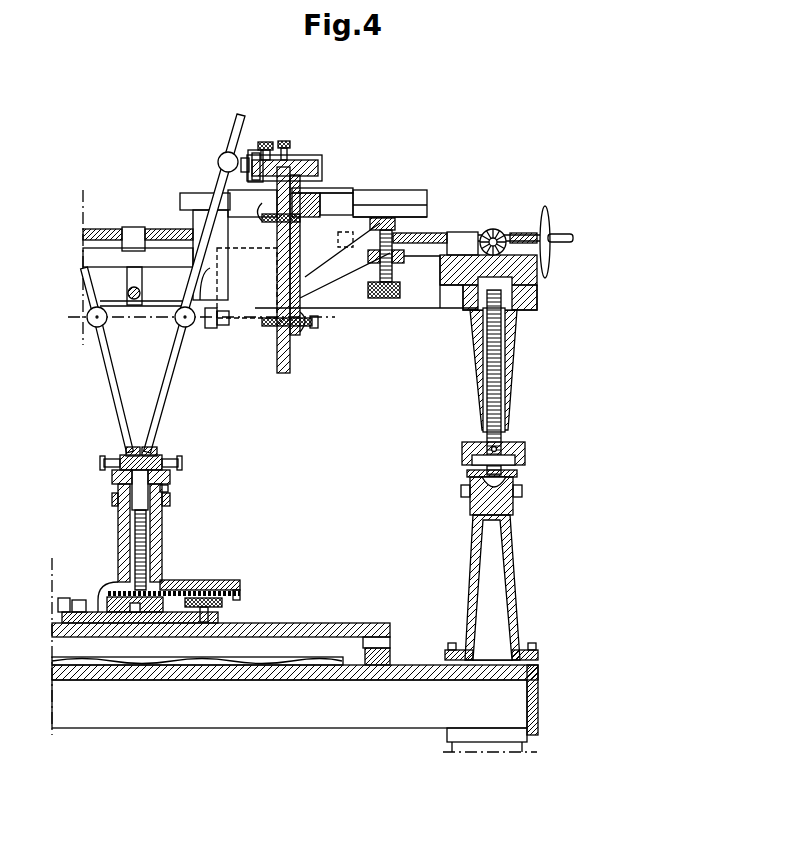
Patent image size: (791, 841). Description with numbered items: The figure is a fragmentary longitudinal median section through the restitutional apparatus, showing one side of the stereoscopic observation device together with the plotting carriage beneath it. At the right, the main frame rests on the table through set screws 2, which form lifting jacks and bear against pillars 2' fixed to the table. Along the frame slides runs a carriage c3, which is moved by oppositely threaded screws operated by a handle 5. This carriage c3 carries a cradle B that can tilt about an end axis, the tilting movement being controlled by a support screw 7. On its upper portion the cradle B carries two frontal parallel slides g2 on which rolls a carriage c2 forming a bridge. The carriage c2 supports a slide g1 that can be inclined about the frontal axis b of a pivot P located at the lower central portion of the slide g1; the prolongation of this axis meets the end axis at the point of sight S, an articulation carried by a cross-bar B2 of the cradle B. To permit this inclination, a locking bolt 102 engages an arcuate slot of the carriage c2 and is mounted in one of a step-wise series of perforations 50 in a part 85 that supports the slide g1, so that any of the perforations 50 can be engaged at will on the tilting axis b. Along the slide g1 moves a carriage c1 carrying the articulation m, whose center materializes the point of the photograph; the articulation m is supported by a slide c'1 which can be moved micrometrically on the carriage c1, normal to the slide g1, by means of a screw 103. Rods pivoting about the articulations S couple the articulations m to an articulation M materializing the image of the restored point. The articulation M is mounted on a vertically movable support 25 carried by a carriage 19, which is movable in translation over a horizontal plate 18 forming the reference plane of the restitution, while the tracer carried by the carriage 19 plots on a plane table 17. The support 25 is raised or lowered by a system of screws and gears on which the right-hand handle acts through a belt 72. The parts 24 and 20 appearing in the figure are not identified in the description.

The carriage c1 is at (297, 160).
The slide c'1 is at (258, 137).
The slide g1 is at (318, 170).
The screw 103 is at (270, 143).
The part supporting the slide g1 85 is at (298, 194).
The locking bolt 102 is at (322, 205).
The carriage forming a bridge c2 is at (355, 192).
The frontal parallel slides g2 is at (427, 205).
The cross-bar B2 is at (397, 226).
The support screw 7 is at (392, 300).
The handle 5 is at (549, 222).
The carriage c3 is at (327, 283).
The perforations 50 is at (276, 310).
The pivot P is at (273, 325).
The frontal axis b— b is at (213, 274).
The cradle B is at (253, 273).
The articulation m is at (217, 158).
The articulation materializing the point of sight S is at (178, 320).
The articulation materializing the image of the restored point M is at (155, 450).
The set screws 2 is at (510, 453).
The pillars 2' is at (510, 492).
The left bearing plate 24 is at (115, 475).
The vertically movable support 25 is at (168, 478).
The slide arm 20 is at (172, 583).
The belt 72 is at (222, 603).
The carriage 19 is at (52, 623).
The plane table 17 is at (110, 660).
The horizontal plate 18 is at (175, 637).